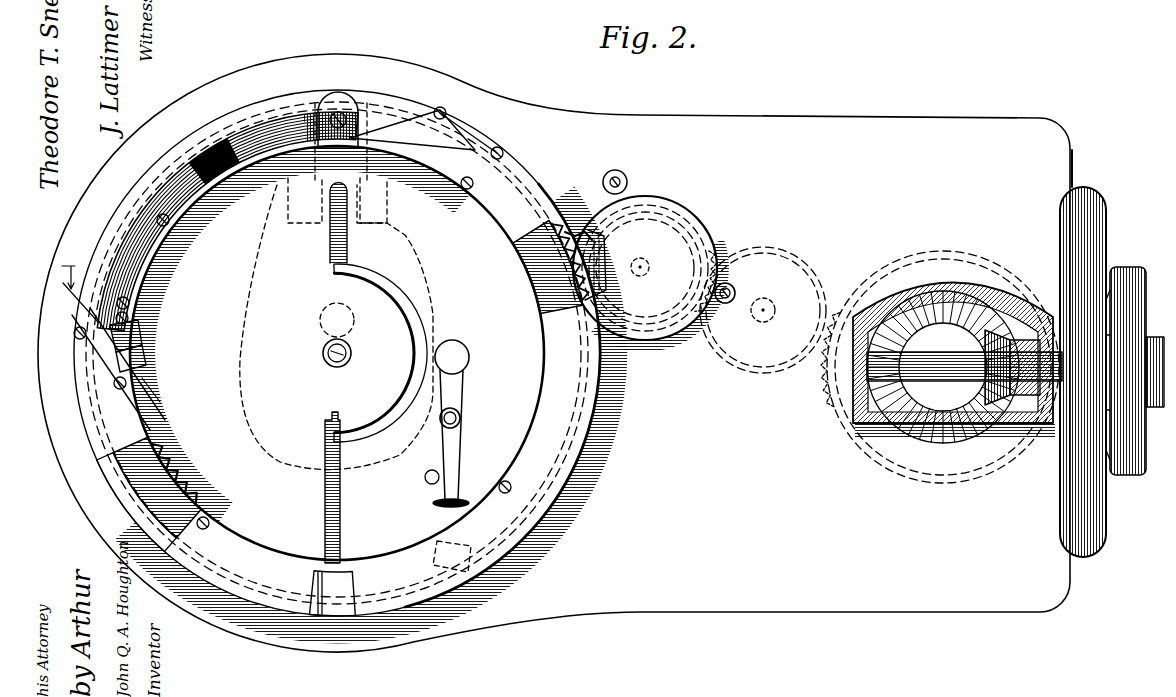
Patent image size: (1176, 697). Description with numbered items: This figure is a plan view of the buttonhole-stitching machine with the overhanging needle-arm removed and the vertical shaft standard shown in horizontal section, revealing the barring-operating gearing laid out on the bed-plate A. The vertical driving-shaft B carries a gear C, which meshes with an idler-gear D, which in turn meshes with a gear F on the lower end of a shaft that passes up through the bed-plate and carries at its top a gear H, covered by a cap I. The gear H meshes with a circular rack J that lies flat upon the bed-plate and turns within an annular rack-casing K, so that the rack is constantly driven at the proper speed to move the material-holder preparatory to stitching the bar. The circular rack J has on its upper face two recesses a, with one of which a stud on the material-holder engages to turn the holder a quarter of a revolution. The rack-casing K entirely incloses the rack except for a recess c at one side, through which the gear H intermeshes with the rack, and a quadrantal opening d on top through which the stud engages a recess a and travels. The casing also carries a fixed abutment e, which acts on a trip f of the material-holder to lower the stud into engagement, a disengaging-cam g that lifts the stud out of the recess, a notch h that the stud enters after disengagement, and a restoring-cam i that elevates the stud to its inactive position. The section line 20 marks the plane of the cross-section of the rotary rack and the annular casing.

The plate A is at (554, 353).
The bevel gear B is at (935, 365).
The gear wheel C is at (942, 256).
The gear wheel D is at (765, 240).
The pawl F is at (703, 252).
The block H is at (578, 262).
The gear wheel I is at (640, 197).
The guide block J is at (160, 497).
The rack segment K is at (125, 506).
The pad a is at (432, 553).
The pawl teeth c is at (575, 228).
The curved spring band d is at (140, 206).
The lever e is at (372, 128).
The slot f is at (372, 147).
The lever bar g is at (105, 347).
The block h is at (158, 389).
The block i is at (135, 338).
The section line 20 is at (113, 343).